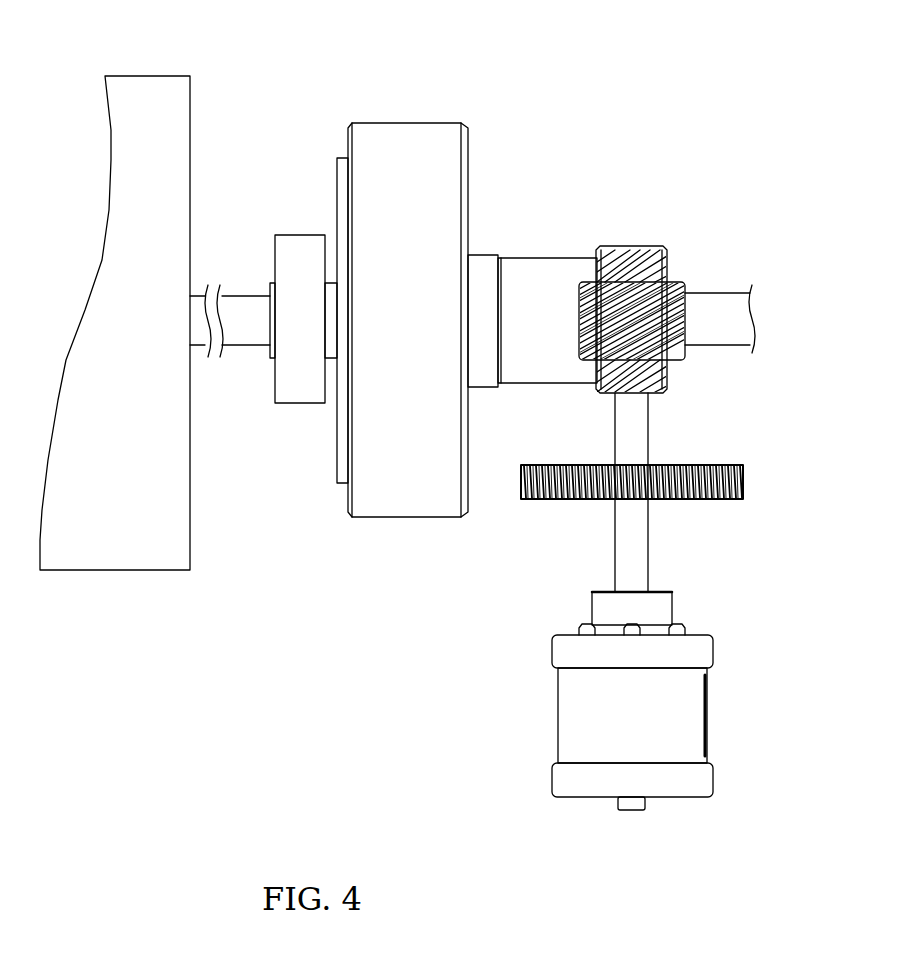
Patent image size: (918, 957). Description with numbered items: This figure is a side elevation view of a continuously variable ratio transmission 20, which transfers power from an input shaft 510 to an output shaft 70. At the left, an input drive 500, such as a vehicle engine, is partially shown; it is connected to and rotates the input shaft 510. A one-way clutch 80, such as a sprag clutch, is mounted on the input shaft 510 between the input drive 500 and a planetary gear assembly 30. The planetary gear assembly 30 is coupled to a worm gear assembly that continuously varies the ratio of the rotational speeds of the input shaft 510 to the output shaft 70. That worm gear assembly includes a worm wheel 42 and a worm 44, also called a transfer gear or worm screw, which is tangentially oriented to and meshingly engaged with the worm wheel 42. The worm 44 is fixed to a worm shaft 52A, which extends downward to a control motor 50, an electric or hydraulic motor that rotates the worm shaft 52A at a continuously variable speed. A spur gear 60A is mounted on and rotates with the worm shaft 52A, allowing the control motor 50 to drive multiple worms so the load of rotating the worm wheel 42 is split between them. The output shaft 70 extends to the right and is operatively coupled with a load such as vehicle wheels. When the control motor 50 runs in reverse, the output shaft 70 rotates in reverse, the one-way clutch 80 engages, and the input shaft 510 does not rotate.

The continuously variable ratio transmission 20 is at (690, 86).
The planetary gear assembly 30 is at (512, 177).
The worm wheel 42 is at (620, 258).
The worm 44 is at (672, 292).
The control motor 50 is at (737, 706).
The worm shaft 52A is at (640, 433).
The spur gear 60A is at (743, 480).
The output shaft 70 is at (705, 338).
The one-way clutch 80 is at (305, 398).
The input drive 500 is at (152, 548).
The input shaft 510 is at (242, 305).